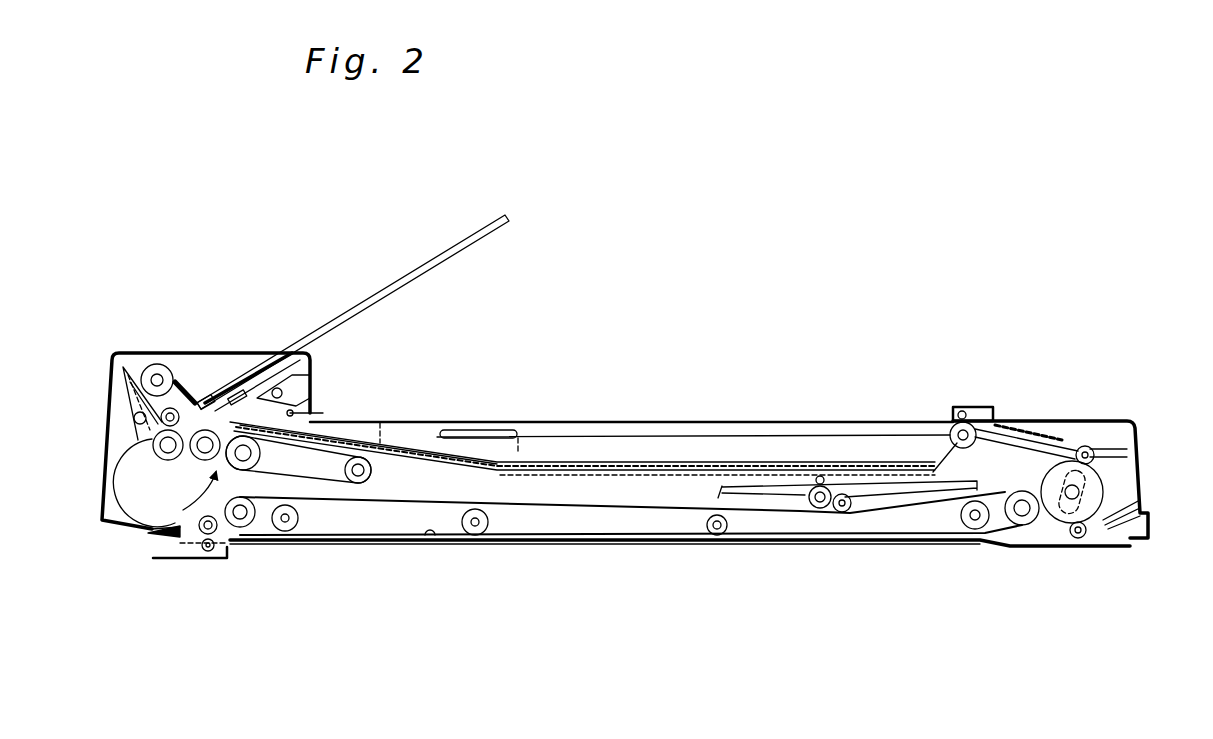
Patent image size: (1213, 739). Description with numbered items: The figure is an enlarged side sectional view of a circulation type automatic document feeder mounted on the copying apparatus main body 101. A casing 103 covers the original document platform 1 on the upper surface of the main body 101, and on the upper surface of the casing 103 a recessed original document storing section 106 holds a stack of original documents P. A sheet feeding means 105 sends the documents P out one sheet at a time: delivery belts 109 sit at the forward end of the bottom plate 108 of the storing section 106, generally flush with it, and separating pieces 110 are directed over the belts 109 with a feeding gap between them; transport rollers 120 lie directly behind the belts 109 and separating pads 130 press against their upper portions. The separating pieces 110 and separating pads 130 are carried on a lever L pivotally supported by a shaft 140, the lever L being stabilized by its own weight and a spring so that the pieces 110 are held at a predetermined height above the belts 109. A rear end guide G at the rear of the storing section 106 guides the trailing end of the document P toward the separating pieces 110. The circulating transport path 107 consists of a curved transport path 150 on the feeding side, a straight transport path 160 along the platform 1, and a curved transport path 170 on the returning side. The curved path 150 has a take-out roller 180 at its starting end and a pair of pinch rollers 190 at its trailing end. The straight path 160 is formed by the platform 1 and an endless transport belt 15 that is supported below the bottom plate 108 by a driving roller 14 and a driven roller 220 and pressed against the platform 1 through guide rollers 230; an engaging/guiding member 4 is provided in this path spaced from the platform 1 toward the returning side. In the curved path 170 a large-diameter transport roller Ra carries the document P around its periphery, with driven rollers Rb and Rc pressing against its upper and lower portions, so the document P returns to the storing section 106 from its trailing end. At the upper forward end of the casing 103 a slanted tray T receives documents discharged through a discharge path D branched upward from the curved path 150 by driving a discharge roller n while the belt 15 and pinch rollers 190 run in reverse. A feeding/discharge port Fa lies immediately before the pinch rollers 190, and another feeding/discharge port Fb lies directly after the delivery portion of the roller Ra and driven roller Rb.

The tray for original document discharge T is at (420, 267).
The discharge roller n is at (150, 365).
The separating pads 130 is at (198, 403).
The separating pieces 110 is at (212, 398).
The lever L is at (255, 370).
The original document discharge path D is at (100, 366).
The shaft 140 is at (290, 386).
The casing 103 is at (683, 418).
The original documents P is at (588, 463).
The original document storing section 106 is at (728, 452).
The rear end guide G is at (999, 400).
The driven roller Rb is at (1090, 448).
The curved transport path at the returning side 170 is at (1103, 478).
The feeding/discharge port Fb is at (1122, 510).
The curved transport path at the feeding side 150 is at (107, 495).
The transport rollers 120 is at (195, 455).
The take-out roller 180 is at (157, 453).
The sheet feeding means 105 is at (176, 537).
The feeding/discharge port Fa is at (175, 546).
The pinch rollers 190 is at (200, 560).
The driven roller 220 is at (248, 524).
The guide rollers 230 is at (292, 531).
The original document platform 1 is at (428, 537).
The delivery belts 109 is at (360, 516).
The transport belt 15 is at (507, 503).
The bottom plate 108 is at (610, 477).
The straight transport path 160 is at (667, 545).
The circulating transport path 107 is at (542, 533).
The engaging/guiding member 4 is at (985, 531).
The driving roller 14 is at (1022, 527).
The large-diameter transport roller Ra is at (1063, 512).
The driven roller Rc is at (1088, 540).
The copying apparatus main body 101 is at (1122, 547).